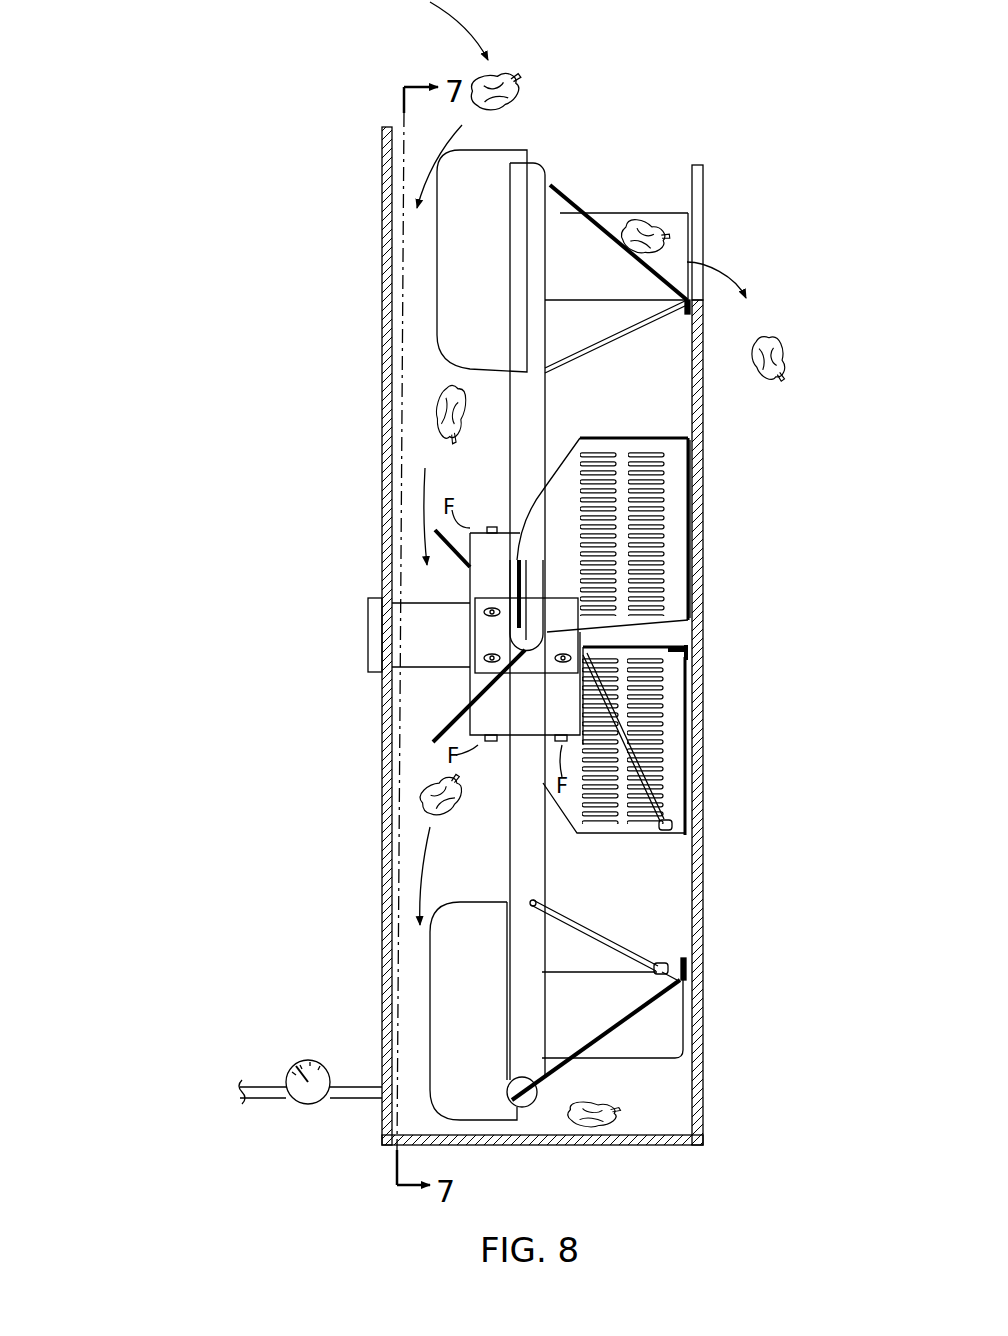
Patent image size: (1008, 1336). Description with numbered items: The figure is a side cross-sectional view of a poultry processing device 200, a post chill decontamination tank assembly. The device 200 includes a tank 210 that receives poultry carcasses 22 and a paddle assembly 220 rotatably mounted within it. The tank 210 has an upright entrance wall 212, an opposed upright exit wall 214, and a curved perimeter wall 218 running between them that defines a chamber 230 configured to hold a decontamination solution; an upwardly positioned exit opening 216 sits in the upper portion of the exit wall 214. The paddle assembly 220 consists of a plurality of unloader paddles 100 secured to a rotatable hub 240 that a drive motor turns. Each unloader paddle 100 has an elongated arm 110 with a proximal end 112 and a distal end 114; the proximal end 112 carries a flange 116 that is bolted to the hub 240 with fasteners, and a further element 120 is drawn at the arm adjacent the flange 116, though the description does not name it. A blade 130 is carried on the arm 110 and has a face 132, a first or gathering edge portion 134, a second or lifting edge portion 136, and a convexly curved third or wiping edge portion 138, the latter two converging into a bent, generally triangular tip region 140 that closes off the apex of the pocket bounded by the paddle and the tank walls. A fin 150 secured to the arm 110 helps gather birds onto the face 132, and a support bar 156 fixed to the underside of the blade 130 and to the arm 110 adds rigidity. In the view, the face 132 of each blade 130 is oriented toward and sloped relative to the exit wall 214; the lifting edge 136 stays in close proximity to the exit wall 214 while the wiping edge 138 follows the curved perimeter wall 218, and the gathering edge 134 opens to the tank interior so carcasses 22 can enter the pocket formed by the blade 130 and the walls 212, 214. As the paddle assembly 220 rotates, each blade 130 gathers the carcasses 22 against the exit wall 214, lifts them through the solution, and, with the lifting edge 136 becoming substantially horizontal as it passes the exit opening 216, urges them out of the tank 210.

The poultry carcass 22 is at (523, 90).
The unloader paddle 100 is at (588, 176).
The elongated arm 110 is at (551, 395).
The proximal end 112 is at (522, 503).
The distal end 114 is at (545, 215).
The flange 116 is at (540, 665).
The channel member 120 is at (532, 565).
The blade 130 is at (561, 190).
The face 132 is at (683, 490).
The first edge portion 134 is at (600, 237).
The second edge portion 136 is at (698, 273).
The third edge portion 138 is at (553, 468).
The tip region 140 is at (672, 225).
The fin 150 is at (450, 268).
The support bar 156 is at (630, 336).
The poultry processing device 200 is at (848, 108).
The tank 210 is at (537, 661).
The entrance wall 212 is at (385, 347).
The exit wall 214 is at (703, 435).
The exit opening 216 is at (700, 303).
The perimeter wall 218 is at (652, 1146).
The paddle assembly 220 is at (438, 874).
The chamber 230 is at (402, 1111).
The rotatable hub 240 is at (475, 685).